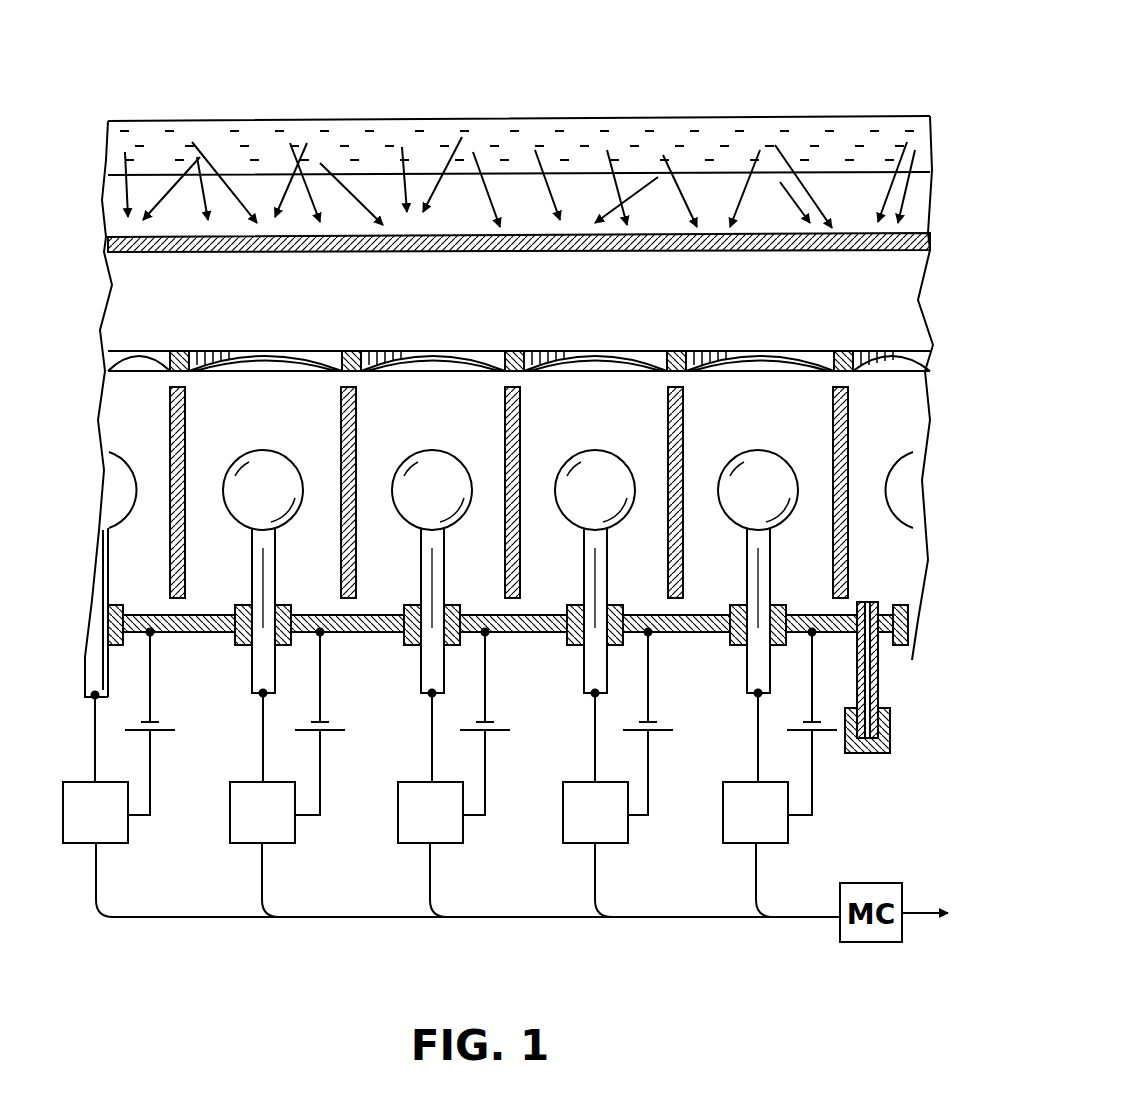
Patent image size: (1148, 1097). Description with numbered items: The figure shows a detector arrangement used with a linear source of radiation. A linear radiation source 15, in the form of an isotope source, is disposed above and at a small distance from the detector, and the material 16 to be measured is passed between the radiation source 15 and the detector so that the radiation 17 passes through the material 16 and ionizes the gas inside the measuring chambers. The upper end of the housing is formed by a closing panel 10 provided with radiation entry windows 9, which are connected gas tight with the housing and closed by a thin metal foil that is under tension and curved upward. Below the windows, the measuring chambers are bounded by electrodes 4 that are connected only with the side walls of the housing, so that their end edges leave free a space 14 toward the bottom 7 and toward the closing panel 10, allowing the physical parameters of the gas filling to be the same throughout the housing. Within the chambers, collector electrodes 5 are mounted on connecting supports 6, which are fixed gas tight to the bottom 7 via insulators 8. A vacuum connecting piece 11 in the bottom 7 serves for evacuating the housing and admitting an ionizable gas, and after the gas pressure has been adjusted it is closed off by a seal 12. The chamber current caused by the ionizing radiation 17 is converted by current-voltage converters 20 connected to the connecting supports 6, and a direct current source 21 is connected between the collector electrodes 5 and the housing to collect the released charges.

The electrodes 4 is at (678, 388).
The collector electrodes 5 is at (460, 522).
The connecting supports 6 is at (600, 665).
The bottom 7 is at (365, 634).
The insulators 8 is at (236, 645).
The radiation entry windows 9 is at (457, 355).
The closing panel 10 is at (513, 348).
The vacuum connecting piece 11 is at (880, 668).
The seal 12 is at (890, 752).
The space 14 is at (840, 388).
The linear radiation source 15 is at (340, 133).
The material 16 is at (348, 240).
The radiation 17 is at (237, 197).
The current-voltage converters 20 is at (252, 813).
The direct current source 21 is at (328, 732).